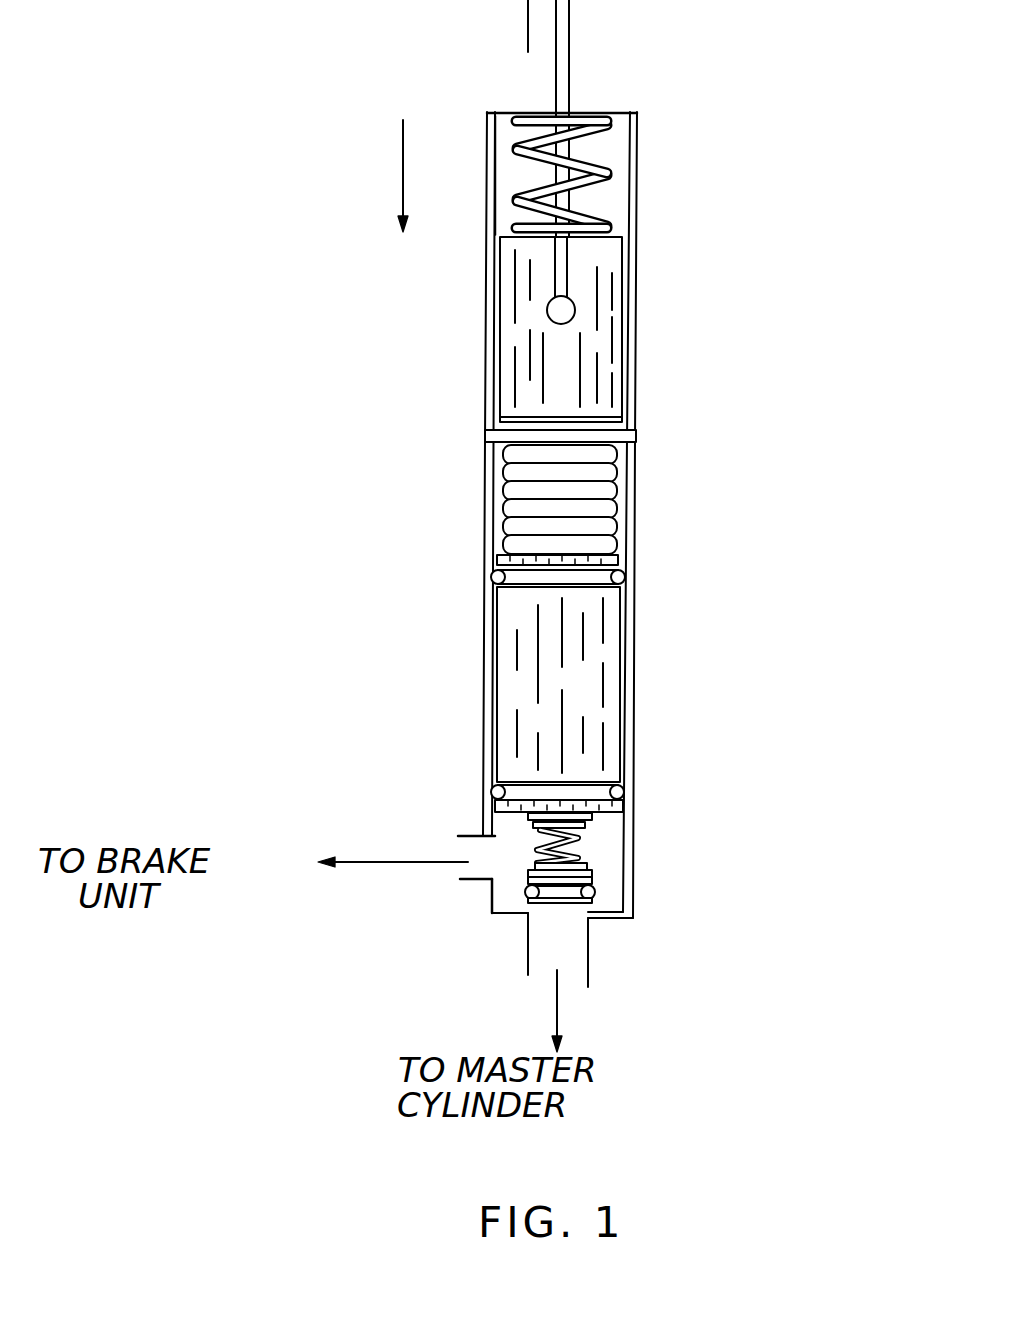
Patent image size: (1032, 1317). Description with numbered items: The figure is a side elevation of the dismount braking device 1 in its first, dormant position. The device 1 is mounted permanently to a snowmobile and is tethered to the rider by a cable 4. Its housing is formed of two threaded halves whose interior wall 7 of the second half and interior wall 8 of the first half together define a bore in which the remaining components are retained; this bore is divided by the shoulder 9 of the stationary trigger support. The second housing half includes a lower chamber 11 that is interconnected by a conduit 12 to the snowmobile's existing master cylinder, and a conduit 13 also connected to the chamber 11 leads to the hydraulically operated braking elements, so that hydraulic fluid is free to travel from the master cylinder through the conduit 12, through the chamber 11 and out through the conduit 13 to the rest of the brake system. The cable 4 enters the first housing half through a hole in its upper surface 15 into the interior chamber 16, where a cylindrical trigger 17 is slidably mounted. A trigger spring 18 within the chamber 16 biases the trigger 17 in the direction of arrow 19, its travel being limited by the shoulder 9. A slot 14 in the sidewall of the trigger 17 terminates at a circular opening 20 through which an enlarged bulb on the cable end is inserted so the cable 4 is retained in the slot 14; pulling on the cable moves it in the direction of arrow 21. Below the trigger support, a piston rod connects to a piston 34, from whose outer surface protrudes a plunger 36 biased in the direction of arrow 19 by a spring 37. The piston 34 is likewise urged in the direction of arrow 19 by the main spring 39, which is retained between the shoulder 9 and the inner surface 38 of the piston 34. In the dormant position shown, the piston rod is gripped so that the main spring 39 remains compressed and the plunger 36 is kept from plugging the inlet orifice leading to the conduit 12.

The dismount braking device 1 is at (622, 526).
The cable 4 is at (571, 12).
The interior wall of the second housing half 7 is at (636, 627).
The interior wall of the first housing half 8 is at (637, 348).
The shoulder 9 is at (640, 436).
The lower chamber 11 is at (603, 830).
The conduit 12 is at (588, 987).
The conduit 13 is at (472, 880).
The slot 14 is at (570, 267).
The upper surface 15 is at (626, 112).
The interior chamber 16 is at (610, 197).
The trigger 17 is at (608, 315).
The trigger spring 18 is at (587, 132).
The arrow 19 is at (403, 177).
The circular opening 20 is at (547, 315).
The arrow 21 is at (527, 15).
The piston 34 is at (598, 712).
The plunger 36 is at (578, 905).
The spring 37 is at (575, 837).
The inner surface of piston 38 is at (613, 553).
The main spring 39 is at (615, 508).